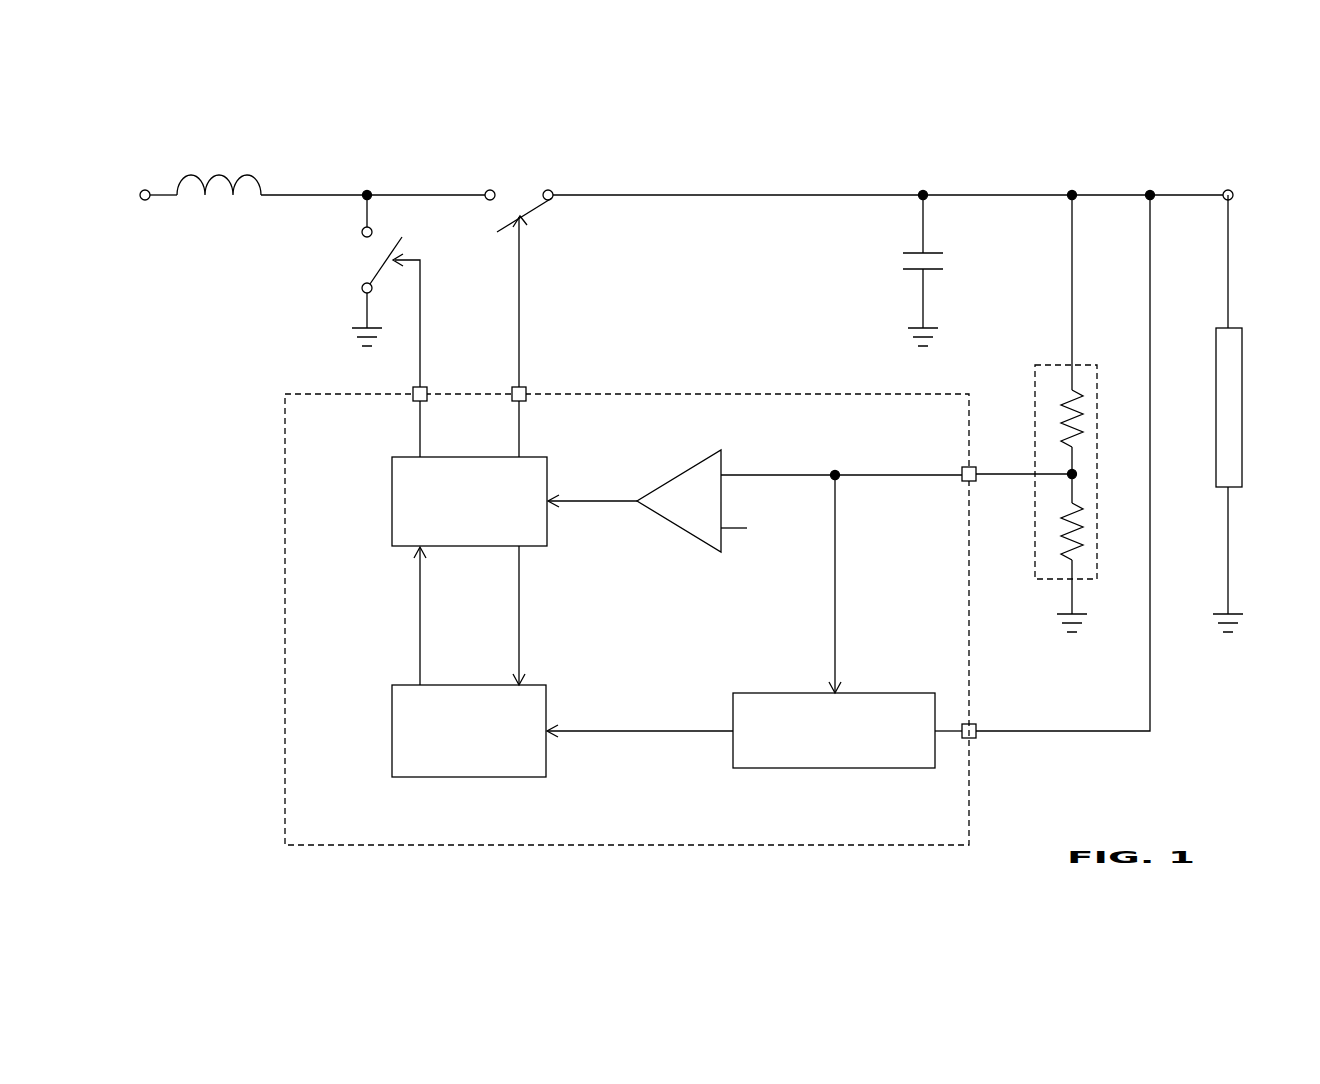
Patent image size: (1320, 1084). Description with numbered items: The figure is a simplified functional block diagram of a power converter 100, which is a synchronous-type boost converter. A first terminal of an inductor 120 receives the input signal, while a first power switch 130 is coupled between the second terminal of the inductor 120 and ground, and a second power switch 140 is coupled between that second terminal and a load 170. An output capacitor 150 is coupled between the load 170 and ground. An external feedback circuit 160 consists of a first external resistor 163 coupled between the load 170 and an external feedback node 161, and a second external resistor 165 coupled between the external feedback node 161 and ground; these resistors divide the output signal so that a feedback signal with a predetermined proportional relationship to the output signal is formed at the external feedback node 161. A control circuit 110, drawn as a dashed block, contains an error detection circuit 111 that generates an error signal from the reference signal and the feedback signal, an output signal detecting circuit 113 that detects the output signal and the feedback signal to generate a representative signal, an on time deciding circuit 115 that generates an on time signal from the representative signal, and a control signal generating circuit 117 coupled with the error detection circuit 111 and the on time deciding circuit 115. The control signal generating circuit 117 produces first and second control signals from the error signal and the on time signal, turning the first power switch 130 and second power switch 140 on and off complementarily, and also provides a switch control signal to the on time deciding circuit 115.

The power converter 100 is at (1122, 150).
The control circuit 110 is at (283, 619).
The error detection circuit 111 is at (680, 528).
The output signal detecting circuit 113 is at (834, 768).
The on time deciding circuit 115 is at (469, 777).
The control signal generating circuit 117 is at (392, 501).
The inductor 120 is at (220, 173).
The first power switch 130 is at (368, 259).
The second power switch 140 is at (518, 192).
The output capacitor 150 is at (908, 260).
The external feedback circuit 160 is at (1082, 365).
The external feedback node 161 is at (1080, 474).
The first external resistor 163 is at (1058, 418).
The second external resistor 165 is at (1058, 532).
The load 170 is at (1216, 450).